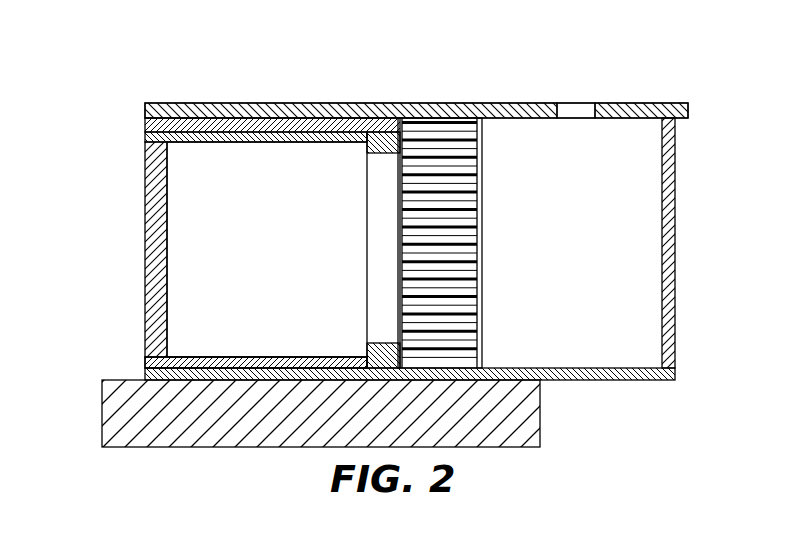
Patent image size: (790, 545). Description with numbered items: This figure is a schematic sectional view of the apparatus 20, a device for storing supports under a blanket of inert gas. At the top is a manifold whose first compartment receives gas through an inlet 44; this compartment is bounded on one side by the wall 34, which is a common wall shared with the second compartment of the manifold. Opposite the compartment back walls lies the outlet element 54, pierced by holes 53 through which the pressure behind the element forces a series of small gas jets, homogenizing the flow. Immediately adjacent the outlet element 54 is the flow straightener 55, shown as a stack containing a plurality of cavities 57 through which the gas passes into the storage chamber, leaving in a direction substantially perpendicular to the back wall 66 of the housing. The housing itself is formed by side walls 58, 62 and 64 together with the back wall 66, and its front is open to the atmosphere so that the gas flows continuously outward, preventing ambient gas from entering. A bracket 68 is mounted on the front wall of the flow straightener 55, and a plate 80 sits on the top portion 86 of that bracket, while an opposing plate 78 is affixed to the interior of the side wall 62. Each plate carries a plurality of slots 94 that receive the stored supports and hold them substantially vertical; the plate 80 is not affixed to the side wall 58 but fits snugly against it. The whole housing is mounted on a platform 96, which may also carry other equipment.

The apparatus 20 is at (606, 71).
The wall 34 is at (586, 251).
The inlet 44 is at (574, 103).
The holes 53 is at (480, 170).
The outlet element 54 is at (482, 112).
The flow straightener 55 is at (467, 212).
The cavities 57 is at (468, 227).
The side wall 58 is at (328, 103).
The side wall 62 is at (148, 373).
The side wall 64 is at (252, 276).
The back wall 66 is at (676, 250).
The bracket 68 is at (382, 228).
The plate 78 is at (148, 362).
The plate 80 is at (149, 123).
The top portion 86 is at (368, 146).
The slots 94 is at (208, 142).
The platform 96 is at (530, 412).